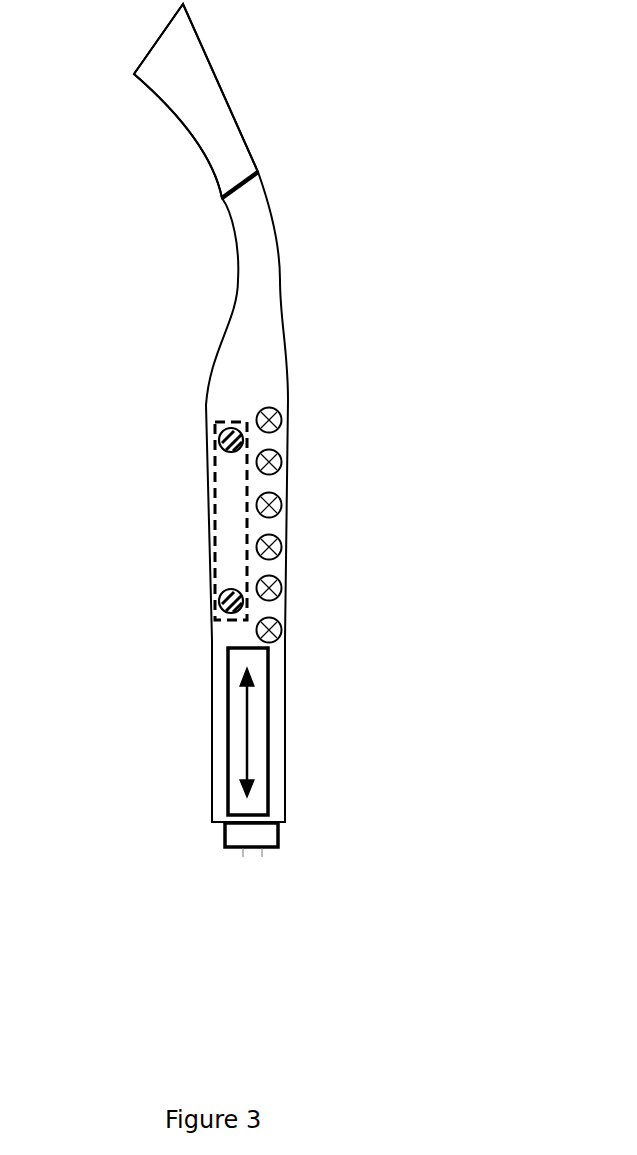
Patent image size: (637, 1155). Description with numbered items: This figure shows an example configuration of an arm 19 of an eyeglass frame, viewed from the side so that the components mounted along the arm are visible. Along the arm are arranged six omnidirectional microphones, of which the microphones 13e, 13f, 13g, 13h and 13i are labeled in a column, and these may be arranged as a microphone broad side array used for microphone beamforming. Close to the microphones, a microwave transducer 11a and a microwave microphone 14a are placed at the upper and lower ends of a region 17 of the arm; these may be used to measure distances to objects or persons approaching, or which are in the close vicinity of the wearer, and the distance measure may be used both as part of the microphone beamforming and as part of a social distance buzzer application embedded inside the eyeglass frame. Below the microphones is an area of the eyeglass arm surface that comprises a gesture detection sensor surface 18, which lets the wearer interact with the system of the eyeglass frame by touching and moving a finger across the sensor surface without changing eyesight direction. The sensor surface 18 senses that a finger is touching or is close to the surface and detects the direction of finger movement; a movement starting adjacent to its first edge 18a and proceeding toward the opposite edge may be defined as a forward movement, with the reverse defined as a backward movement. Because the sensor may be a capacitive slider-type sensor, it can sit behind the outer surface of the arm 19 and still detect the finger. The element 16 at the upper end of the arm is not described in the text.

The tip portion 16 is at (230, 105).
The sensing region 17 is at (227, 522).
The microwave transducer 11a is at (222, 438).
The microwave microphone 14a is at (222, 600).
The omnidirectional microphone 13e is at (275, 420).
The omnidirectional microphone 13f is at (275, 462).
The omnidirectional microphone 13g is at (275, 505).
The omnidirectional microphone 13h is at (275, 547).
The omnidirectional microphone 13i is at (275, 588).
The gesture detection sensor surface 18 is at (265, 715).
The first edge of the sensor surface 18a is at (248, 728).
The arm 19 is at (278, 845).